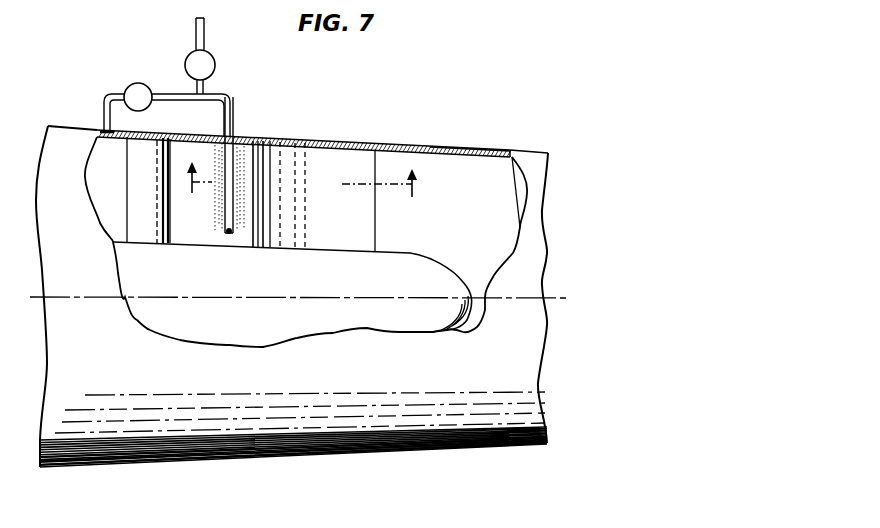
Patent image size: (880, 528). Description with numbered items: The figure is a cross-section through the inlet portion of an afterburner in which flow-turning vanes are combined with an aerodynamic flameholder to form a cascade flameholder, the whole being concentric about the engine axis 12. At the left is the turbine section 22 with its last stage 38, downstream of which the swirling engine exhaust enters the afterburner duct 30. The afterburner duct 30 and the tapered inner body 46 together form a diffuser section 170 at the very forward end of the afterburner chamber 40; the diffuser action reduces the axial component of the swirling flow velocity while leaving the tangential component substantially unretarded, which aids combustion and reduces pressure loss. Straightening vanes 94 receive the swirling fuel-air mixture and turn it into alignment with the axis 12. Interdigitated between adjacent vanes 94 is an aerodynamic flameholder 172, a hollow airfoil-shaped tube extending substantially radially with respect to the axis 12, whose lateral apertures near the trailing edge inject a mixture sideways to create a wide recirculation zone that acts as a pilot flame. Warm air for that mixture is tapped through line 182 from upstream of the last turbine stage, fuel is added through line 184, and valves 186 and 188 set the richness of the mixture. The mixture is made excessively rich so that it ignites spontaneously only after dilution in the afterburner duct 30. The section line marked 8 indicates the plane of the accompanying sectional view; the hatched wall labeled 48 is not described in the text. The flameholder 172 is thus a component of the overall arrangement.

The axis 12 is at (553, 298).
The turbine section 22 is at (111, 187).
The afterburner duct 30 is at (466, 132).
The last stage of turbine section 38 is at (150, 185).
The afterburner chamber 40 is at (517, 213).
The tapered inner body 46 is at (428, 317).
The plate 48 is at (310, 160).
The straightening vanes 94 is at (375, 232).
The diffuser section 170 is at (187, 227).
The aerodynamic flameholder 172 is at (228, 235).
The line 182 is at (103, 112).
The line 184 is at (193, 27).
The valve 186 is at (152, 83).
The valve 188 is at (215, 62).
The section line 8- 8 is at (300, 191).